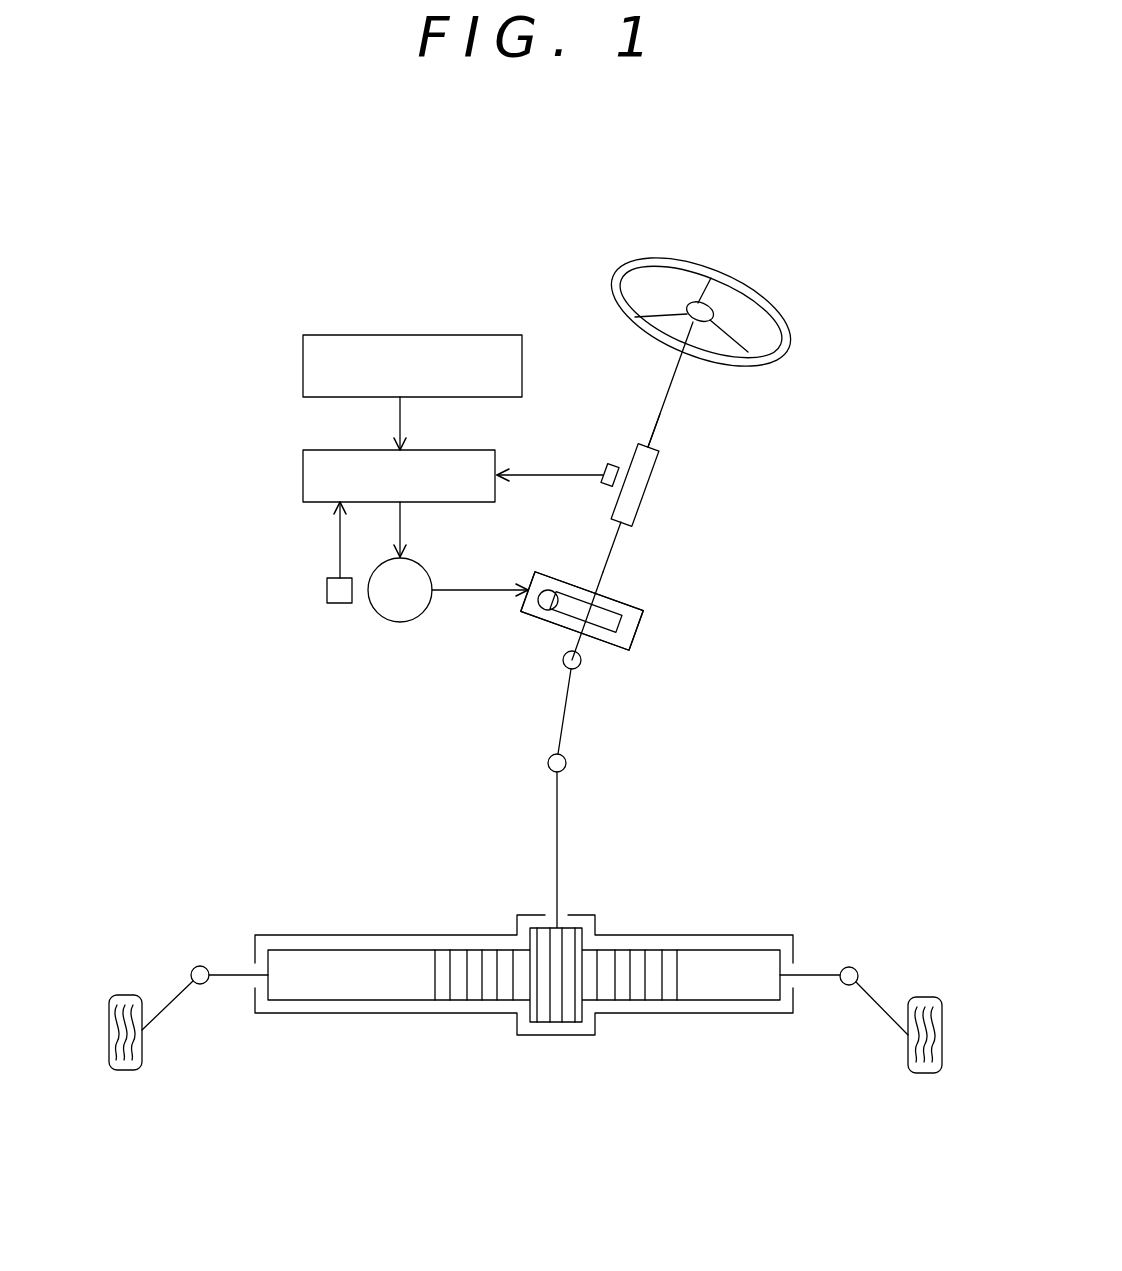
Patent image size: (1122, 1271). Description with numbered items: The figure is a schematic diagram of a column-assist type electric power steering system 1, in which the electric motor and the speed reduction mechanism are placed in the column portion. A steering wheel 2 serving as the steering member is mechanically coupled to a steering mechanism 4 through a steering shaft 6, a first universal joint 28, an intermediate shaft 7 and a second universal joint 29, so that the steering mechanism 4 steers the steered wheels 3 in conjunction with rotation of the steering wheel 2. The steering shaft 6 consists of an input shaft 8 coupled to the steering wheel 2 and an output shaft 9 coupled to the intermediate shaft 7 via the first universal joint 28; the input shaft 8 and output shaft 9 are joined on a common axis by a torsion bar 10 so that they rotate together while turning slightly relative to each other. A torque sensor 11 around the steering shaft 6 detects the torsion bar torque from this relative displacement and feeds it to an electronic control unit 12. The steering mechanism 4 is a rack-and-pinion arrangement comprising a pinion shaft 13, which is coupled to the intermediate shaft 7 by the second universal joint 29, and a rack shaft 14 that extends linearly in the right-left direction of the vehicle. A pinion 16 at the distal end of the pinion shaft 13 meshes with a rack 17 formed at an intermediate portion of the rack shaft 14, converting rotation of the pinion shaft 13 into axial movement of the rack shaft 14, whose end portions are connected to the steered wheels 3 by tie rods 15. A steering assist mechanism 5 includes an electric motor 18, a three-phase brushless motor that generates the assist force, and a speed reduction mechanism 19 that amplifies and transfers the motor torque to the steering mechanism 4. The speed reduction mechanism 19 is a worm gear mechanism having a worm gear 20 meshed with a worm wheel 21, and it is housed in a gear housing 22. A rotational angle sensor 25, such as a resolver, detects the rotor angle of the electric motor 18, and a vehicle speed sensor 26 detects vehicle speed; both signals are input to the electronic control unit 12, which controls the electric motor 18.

The electric power steering system 1 is at (390, 258).
The steering wheel 2 is at (707, 262).
The steered wheels 3 is at (125, 995).
The steering mechanism 4 is at (620, 948).
The steering assist mechanism 5 is at (551, 571).
The steering shaft 6 is at (673, 393).
The intermediate shaft 7 is at (567, 727).
The input shaft 8 is at (656, 430).
The output shaft 9 is at (625, 537).
The torsion bar 10 is at (638, 488).
The torque sensor 11 is at (601, 484).
The electronic control unit 12 is at (303, 474).
The pinion shaft 13 is at (557, 832).
The rack shaft 14 is at (727, 1013).
The tie rods 15 is at (175, 1000).
The pinion 16 is at (557, 1022).
The rack 17 is at (458, 1000).
The electric motor 18 is at (398, 620).
The speed reduction mechanism 19 is at (647, 605).
The worm gear 20 is at (543, 606).
The worm wheel 21 is at (612, 625).
The gear housing 22 is at (612, 650).
The rotational angle sensor 25 is at (327, 590).
The vehicle speed sensor 26 is at (303, 360).
The first universal joint 28 is at (563, 660).
The second universal joint 29 is at (548, 763).